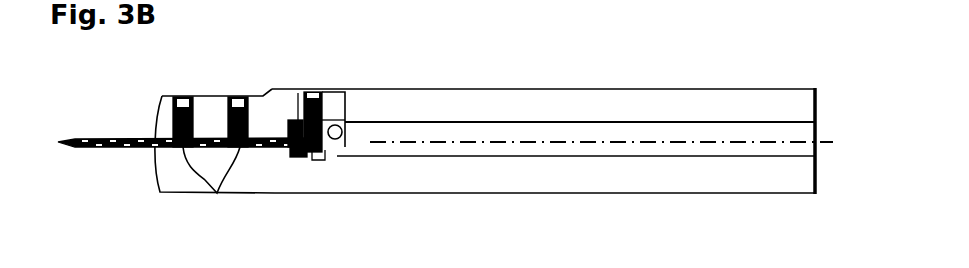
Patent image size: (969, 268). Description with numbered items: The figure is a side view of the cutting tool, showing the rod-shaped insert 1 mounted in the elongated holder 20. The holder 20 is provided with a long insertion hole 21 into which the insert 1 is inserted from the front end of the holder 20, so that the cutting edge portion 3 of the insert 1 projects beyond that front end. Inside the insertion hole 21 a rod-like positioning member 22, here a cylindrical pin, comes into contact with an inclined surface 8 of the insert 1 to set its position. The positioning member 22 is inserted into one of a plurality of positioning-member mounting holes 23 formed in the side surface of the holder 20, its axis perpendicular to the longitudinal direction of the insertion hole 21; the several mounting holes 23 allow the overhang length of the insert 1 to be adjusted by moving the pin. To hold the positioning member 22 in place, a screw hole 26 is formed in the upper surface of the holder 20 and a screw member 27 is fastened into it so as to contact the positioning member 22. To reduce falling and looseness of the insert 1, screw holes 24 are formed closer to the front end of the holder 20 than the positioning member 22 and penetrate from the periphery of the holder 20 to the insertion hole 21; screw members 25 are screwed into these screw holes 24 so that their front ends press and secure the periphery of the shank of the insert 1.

The insert 1 is at (630, 72).
The cutting edge portion 3 is at (75, 140).
The inclined surface 8 is at (348, 139).
The holder 20 is at (553, 86).
The insertion hole 21 is at (405, 150).
The positioning member 22 is at (307, 158).
The positioning-member mounting holes 23 is at (313, 152).
The screw holes 24 is at (245, 96).
The screw members 25 is at (217, 193).
The screw hole 26 is at (302, 82).
The screw member 27 is at (300, 107).